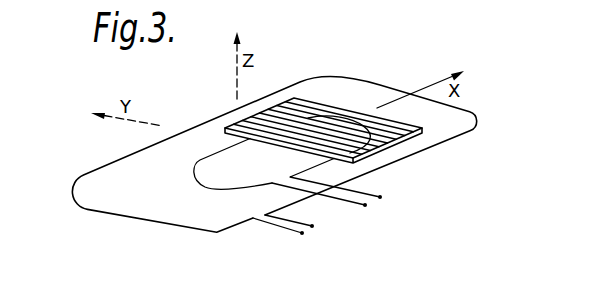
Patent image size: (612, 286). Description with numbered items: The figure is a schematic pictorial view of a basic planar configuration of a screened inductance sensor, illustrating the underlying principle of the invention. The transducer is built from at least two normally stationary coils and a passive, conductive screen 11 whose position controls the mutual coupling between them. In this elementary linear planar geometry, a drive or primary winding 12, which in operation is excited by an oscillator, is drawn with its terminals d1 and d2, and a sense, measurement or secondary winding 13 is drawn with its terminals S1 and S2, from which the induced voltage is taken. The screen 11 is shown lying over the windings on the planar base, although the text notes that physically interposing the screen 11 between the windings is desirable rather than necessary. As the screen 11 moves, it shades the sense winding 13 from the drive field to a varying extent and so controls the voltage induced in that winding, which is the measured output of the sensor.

The screen 11 is at (283, 107).
The drive winding 12 is at (192, 229).
The sense winding 13 is at (216, 190).
The sense winding terminal S1 is at (332, 208).
The sense winding terminal S2 is at (347, 183).
The drive winding terminal d1 is at (278, 241).
The drive winding terminal d2 is at (301, 229).